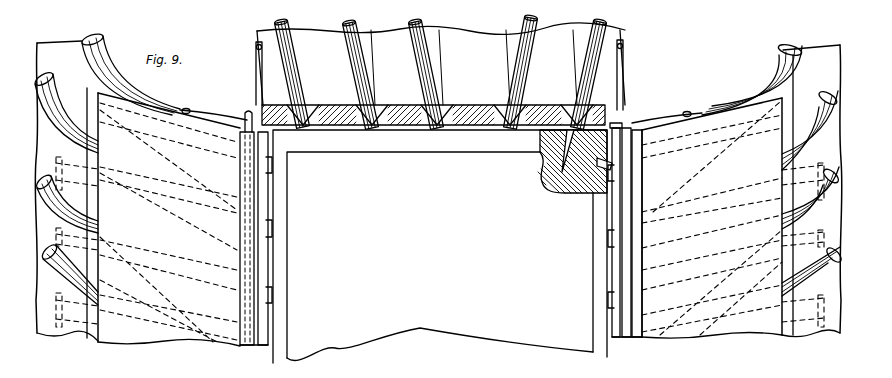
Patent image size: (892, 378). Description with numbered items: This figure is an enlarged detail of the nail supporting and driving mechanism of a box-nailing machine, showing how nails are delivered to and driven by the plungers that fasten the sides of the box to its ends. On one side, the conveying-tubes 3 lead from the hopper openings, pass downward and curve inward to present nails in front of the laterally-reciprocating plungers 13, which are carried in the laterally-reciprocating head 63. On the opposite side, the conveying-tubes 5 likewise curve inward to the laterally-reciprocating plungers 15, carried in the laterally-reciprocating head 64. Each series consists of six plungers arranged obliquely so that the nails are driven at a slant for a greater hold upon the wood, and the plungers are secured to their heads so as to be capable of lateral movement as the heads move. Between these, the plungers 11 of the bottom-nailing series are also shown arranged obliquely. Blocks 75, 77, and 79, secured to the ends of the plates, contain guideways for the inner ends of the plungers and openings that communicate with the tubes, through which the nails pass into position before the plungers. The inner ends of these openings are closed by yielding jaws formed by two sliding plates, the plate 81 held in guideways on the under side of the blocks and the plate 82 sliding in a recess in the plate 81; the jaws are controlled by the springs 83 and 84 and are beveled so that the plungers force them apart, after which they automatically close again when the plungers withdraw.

The laterally-reciprocating head 64 is at (66, 191).
The conveying-tubes 5 is at (106, 168).
The laterally-reciprocating plungers 15 is at (92, 345).
The block 79 is at (169, 219).
The spring 84 is at (238, 113).
The spring 83 is at (256, 80).
The block 75 is at (441, 64).
The plungers 11 is at (294, 52).
The jaw plate 82 is at (326, 126).
The jaw plate 81 is at (420, 126).
The laterally-reciprocating head 63 is at (812, 191).
The conveying-tubes 3 is at (773, 169).
The laterally-reciprocating plungers 13 is at (788, 345).
The block 77 is at (712, 218).